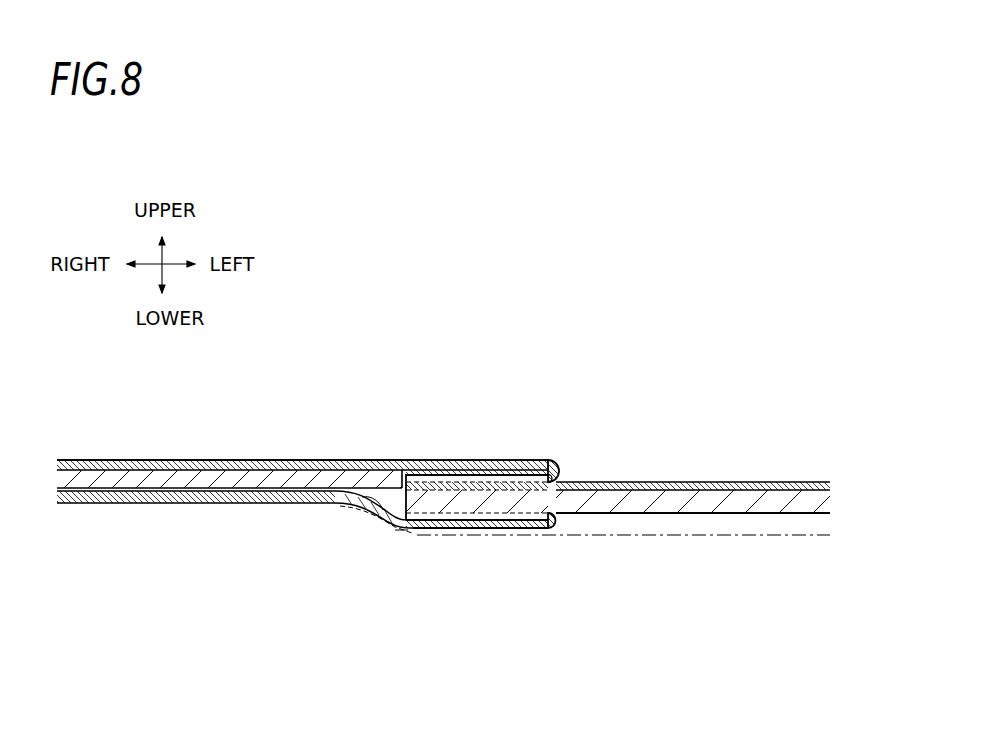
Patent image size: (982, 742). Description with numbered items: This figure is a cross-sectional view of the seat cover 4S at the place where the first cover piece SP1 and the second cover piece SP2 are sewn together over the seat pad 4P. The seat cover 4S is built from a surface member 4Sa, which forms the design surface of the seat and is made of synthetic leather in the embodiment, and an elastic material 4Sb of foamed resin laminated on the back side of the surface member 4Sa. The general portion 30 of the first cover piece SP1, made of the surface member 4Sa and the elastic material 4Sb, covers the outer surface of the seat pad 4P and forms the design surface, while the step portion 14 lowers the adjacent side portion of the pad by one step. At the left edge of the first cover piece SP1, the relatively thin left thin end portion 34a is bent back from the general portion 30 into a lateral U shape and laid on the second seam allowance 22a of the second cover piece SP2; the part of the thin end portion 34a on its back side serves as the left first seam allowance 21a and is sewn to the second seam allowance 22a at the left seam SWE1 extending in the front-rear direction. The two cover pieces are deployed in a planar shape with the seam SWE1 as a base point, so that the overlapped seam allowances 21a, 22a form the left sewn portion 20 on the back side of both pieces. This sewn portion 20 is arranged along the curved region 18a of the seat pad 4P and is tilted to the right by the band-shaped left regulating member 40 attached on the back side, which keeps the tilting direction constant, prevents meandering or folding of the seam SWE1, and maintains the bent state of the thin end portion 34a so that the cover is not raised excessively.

The seat cover 4S is at (716, 337).
The surface member 4Sa is at (122, 466).
The elastic material 4Sb is at (147, 478).
The general portion 30 is at (400, 515).
The left thin end portion 34a is at (400, 383).
The left first seam allowance 21a is at (498, 462).
The second seam allowance 22a is at (556, 478).
The left sewn portion 20 is at (647, 390).
The first cover piece SP1 is at (287, 458).
The second cover piece SP2 is at (748, 514).
The left regulating member 40 is at (252, 497).
The step portion 14 is at (372, 512).
The curved region 18a is at (401, 537).
The left seam SWE1 is at (557, 505).
The seat pad 4P is at (667, 515).